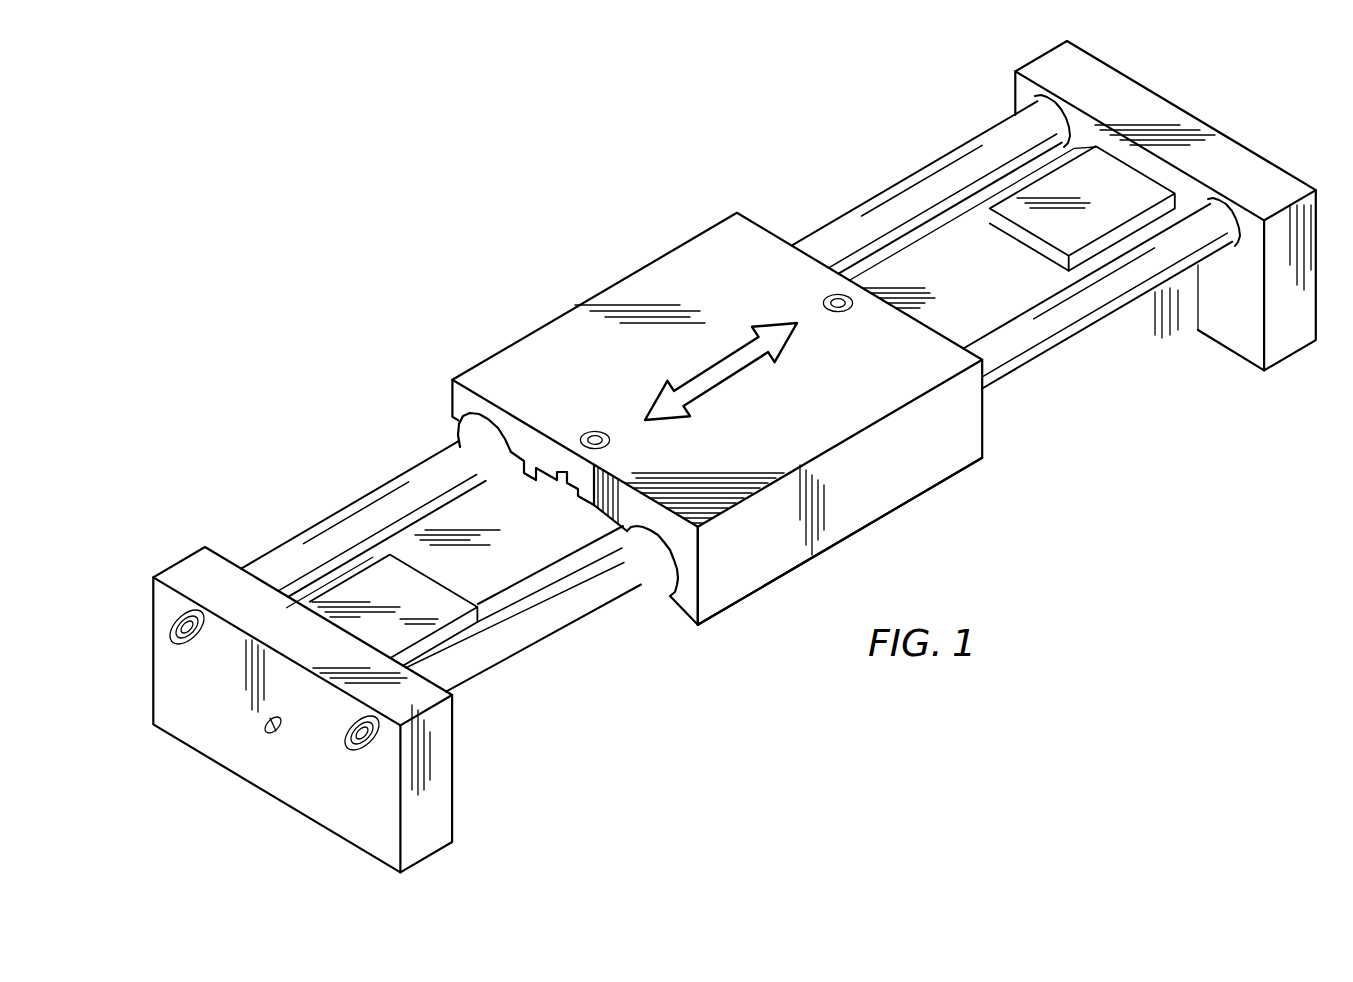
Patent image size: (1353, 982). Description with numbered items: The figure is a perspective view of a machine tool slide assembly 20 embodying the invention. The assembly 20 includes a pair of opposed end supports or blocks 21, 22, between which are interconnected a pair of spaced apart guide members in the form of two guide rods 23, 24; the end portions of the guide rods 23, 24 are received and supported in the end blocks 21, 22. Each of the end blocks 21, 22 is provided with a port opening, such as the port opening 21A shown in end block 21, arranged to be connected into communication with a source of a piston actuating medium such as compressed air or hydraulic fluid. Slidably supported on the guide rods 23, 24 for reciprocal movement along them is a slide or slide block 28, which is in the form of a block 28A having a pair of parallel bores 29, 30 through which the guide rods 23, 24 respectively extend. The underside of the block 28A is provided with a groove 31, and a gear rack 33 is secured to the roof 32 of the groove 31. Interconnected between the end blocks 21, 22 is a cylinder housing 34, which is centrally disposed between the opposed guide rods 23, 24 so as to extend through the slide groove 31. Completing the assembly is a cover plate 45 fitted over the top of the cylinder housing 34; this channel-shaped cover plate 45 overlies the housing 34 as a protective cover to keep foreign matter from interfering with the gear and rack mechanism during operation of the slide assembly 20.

The machine tool slide assembly 20 is at (786, 226).
The end support or block 21 is at (443, 791).
The port opening 21A is at (278, 735).
The end support or block 22 is at (1293, 334).
The guide rod 23 is at (1073, 313).
The guide rod 24 is at (939, 163).
The slide or slide block 28 is at (870, 497).
The block 28A is at (738, 608).
The bore 29 is at (670, 600).
The bore 30 is at (455, 432).
The groove 31 is at (530, 460).
The roof 32 is at (600, 500).
The gear rack 33 is at (588, 478).
The cylinder housing 34 is at (1130, 190).
The cover plate 45 is at (997, 250).